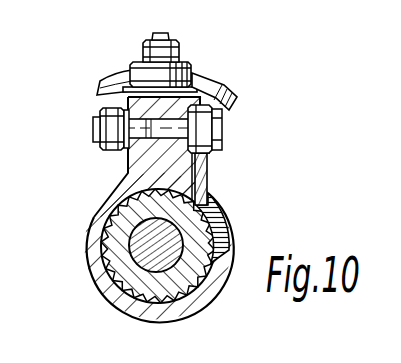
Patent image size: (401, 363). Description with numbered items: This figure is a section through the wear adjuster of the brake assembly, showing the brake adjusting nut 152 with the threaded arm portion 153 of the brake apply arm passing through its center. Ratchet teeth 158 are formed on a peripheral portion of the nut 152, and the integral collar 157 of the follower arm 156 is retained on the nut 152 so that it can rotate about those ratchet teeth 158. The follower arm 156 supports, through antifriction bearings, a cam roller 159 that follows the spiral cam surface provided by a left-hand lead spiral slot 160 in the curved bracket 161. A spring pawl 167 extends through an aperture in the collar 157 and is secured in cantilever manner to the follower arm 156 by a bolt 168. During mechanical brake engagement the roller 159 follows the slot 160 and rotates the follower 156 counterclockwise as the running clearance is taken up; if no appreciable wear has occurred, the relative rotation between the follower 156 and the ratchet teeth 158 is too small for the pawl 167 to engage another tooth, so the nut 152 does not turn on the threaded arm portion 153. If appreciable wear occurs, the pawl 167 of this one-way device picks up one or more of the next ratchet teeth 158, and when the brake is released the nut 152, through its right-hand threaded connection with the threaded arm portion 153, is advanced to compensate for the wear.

The brake adjusting nut 152 is at (98, 213).
The threaded arm portion 153 is at (135, 250).
The follower arm 156 is at (120, 156).
The collar 157 is at (105, 200).
The ratchet teeth 158 is at (215, 232).
The cam roller 159 is at (140, 68).
The spiral slot 160 is at (203, 80).
The curved bracket 161 is at (237, 101).
The spring pawl 167 is at (208, 176).
The bolt 168 is at (222, 131).